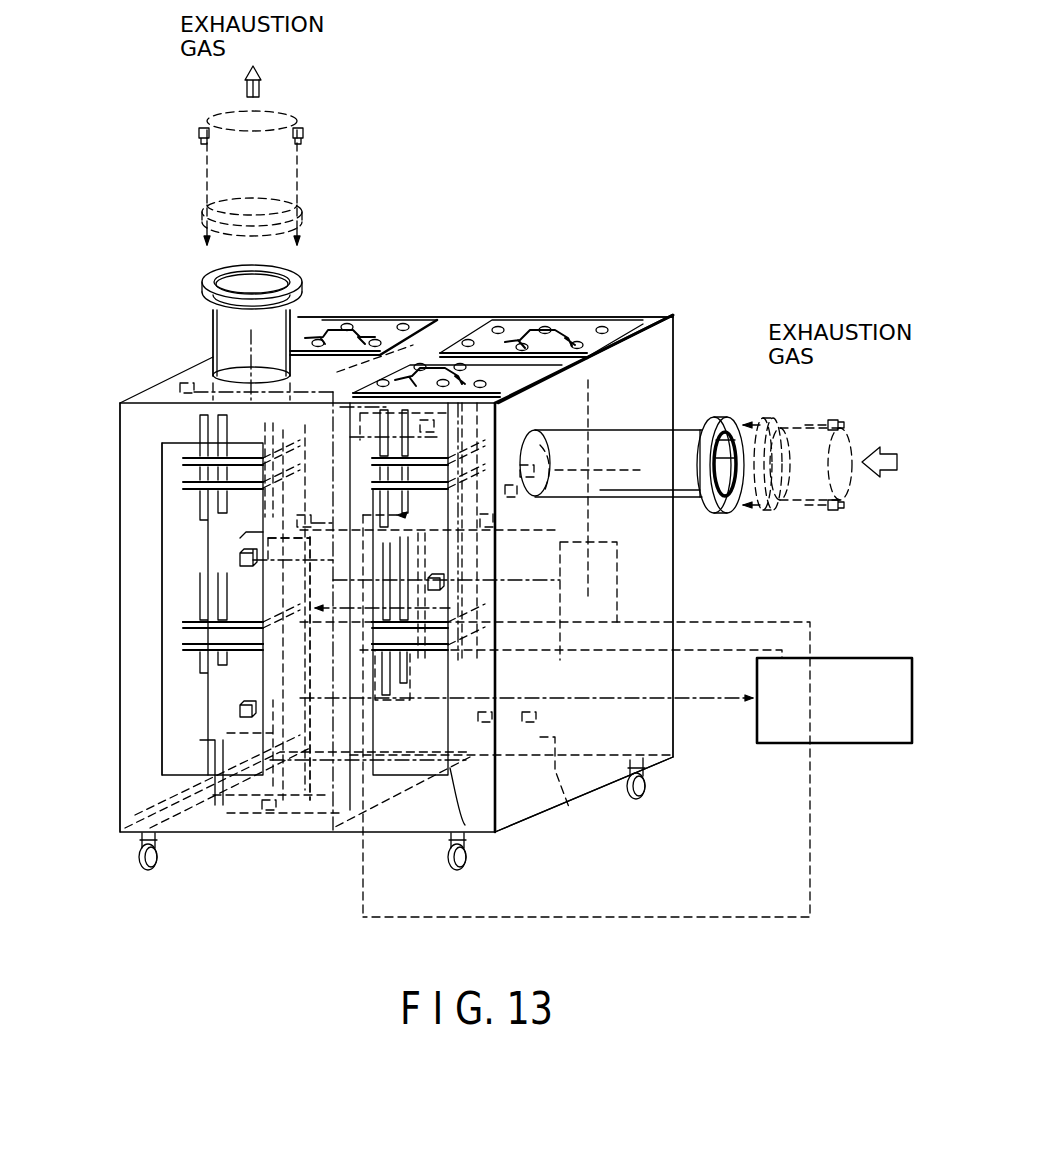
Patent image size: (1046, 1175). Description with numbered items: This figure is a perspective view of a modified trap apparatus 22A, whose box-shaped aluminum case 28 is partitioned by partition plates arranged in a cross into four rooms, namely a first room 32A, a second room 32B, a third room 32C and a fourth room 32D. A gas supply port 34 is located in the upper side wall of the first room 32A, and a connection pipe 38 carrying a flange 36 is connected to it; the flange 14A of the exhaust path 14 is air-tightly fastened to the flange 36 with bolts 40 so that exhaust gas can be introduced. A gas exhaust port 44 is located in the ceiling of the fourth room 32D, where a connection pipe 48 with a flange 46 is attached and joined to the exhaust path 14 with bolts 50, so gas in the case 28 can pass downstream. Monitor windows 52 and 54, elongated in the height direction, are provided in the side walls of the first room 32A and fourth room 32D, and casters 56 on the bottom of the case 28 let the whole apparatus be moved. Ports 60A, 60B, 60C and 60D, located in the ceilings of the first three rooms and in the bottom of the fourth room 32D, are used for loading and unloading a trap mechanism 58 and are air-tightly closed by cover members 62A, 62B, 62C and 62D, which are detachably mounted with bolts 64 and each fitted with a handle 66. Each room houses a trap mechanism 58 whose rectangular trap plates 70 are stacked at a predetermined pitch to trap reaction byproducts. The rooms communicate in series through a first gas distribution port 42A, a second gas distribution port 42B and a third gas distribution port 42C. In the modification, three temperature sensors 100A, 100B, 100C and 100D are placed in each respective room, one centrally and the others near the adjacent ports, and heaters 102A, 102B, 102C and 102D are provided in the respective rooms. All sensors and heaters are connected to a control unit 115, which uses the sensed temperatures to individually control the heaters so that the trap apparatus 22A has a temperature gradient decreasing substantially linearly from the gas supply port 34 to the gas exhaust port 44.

The exhaust path 14 is at (818, 490).
The flange of the exhaust path 14A is at (775, 512).
The trap apparatus 22A is at (358, 943).
The case 28 is at (160, 545).
The first room 32A is at (530, 808).
The second room 32B is at (605, 762).
The third room 32C is at (315, 318).
The fourth room 32D is at (128, 806).
The gas supply port 34 is at (538, 482).
The flange 36 is at (728, 513).
The connection pipe 38 is at (693, 505).
The bolts 40 is at (833, 420).
The first gas distribution port 42A is at (562, 775).
The second gas distribution port 42B is at (358, 372).
The third gas distribution port 42C is at (220, 745).
The gas exhaust port 44 is at (212, 366).
The flange 46 is at (210, 282).
The connection pipe 48 is at (218, 333).
The bolts 50 is at (303, 134).
The monitor window 52 is at (452, 770).
The monitor window 54 is at (160, 592).
The casters 56 is at (455, 868).
The trap mechanism 58 is at (183, 472).
The port 60A is at (547, 383).
The port 60B is at (633, 340).
The port 60C is at (440, 335).
The port 60D is at (278, 812).
The cover member 62A is at (487, 383).
The cover member 62B is at (585, 335).
The cover member 62C is at (385, 348).
The cover member 62D is at (198, 822).
The bolts 64 is at (400, 328).
The handle 66 is at (340, 335).
The trap plates 70 is at (183, 626).
The temperature sensors 100A is at (540, 453).
The temperature sensors 100B is at (508, 485).
The temperature sensors 100C is at (290, 775).
The temperature sensors 100D is at (180, 388).
The heater 102A is at (600, 545).
The heater 102B is at (352, 675).
The heater 102C is at (382, 444).
The heater 102D is at (240, 572).
The control unit 115 is at (853, 657).